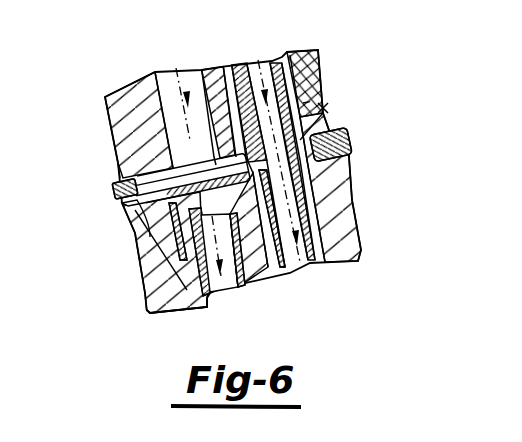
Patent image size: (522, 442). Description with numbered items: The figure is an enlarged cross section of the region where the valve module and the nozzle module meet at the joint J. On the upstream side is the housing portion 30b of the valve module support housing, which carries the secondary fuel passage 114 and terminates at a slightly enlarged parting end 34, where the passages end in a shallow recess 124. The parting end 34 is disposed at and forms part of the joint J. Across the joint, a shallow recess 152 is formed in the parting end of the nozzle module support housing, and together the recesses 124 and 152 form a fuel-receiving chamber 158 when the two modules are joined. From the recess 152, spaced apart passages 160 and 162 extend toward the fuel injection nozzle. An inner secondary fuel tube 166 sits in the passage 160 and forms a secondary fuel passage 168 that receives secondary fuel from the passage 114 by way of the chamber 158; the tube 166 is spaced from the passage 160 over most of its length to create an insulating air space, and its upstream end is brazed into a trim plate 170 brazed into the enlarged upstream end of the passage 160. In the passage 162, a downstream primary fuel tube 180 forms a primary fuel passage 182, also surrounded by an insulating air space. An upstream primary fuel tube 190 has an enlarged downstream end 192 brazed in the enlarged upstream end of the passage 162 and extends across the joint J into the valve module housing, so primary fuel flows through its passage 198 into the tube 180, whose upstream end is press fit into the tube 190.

The housing portion 30b is at (123, 103).
The secondary fuel passage 114 is at (167, 78).
The fuel-receiving chamber 158 is at (199, 72).
The passage 198 is at (258, 57).
The upstream primary fuel tube 190 is at (293, 72).
The enlarged downstream end 192 is at (329, 108).
The passage 162 is at (358, 221).
The shallow recess 124 is at (148, 162).
The parting end 34 is at (114, 184).
The joint J is at (116, 201).
The shallow recess 152 is at (127, 218).
The trim plate 170 is at (146, 235).
The secondary fuel passage 168 is at (200, 273).
The passage 160 is at (150, 312).
The inner secondary fuel tube 166 is at (207, 297).
The downstream primary fuel tube 180 is at (284, 271).
The primary fuel passage 182 is at (281, 273).